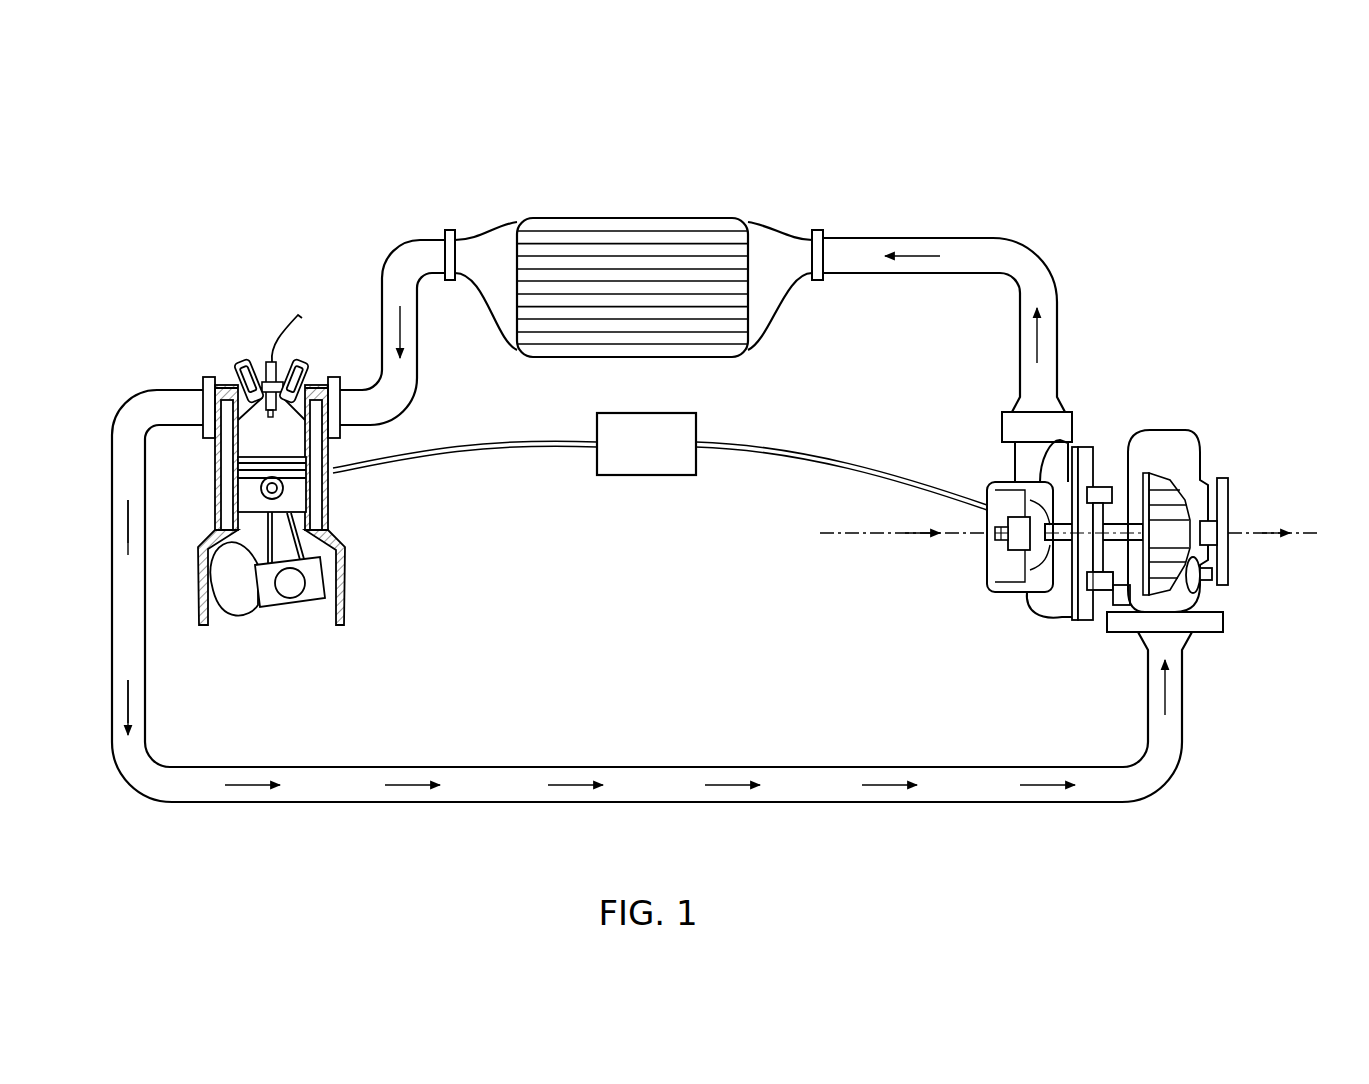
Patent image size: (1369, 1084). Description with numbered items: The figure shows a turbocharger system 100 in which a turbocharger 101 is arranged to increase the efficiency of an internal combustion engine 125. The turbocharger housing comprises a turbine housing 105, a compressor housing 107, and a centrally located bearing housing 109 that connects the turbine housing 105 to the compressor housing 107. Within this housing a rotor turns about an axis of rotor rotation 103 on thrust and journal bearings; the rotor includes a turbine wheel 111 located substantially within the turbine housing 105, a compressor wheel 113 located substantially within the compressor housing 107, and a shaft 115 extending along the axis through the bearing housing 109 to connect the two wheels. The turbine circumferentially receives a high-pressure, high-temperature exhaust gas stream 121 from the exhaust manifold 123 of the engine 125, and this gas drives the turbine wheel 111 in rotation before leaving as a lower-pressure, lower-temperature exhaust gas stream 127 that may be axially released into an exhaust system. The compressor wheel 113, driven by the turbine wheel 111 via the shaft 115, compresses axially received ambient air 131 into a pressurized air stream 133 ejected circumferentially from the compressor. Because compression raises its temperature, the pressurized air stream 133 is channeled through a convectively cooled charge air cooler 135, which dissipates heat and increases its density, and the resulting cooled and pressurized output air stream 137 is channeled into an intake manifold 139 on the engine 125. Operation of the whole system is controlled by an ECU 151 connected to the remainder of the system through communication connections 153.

The turbocharger system 100 is at (1064, 181).
The turbocharger 101 is at (1084, 521).
The axis of rotor rotation 103 is at (1311, 533).
The turbine housing 105 is at (1188, 452).
The compressor housing 107 is at (990, 486).
The bearing housing 109 is at (1103, 490).
The turbine wheel 111 is at (1160, 478).
The compressor wheel 113 is at (1030, 560).
The shaft 115 is at (1103, 575).
The exhaust gas stream 121 is at (737, 790).
The exhaust manifold 123 is at (235, 382).
The internal combustion engine 125 is at (299, 493).
The lower-pressure exhaust gas stream 127 is at (1247, 533).
The ambient air 131 is at (860, 537).
The pressurized air stream 133 is at (918, 257).
The charge air cooler 135 is at (630, 240).
The cooled and pressurized output air stream 137 is at (397, 327).
The intake manifold 139 is at (303, 470).
The ECU 151 is at (645, 477).
The communication connections 153 is at (756, 458).